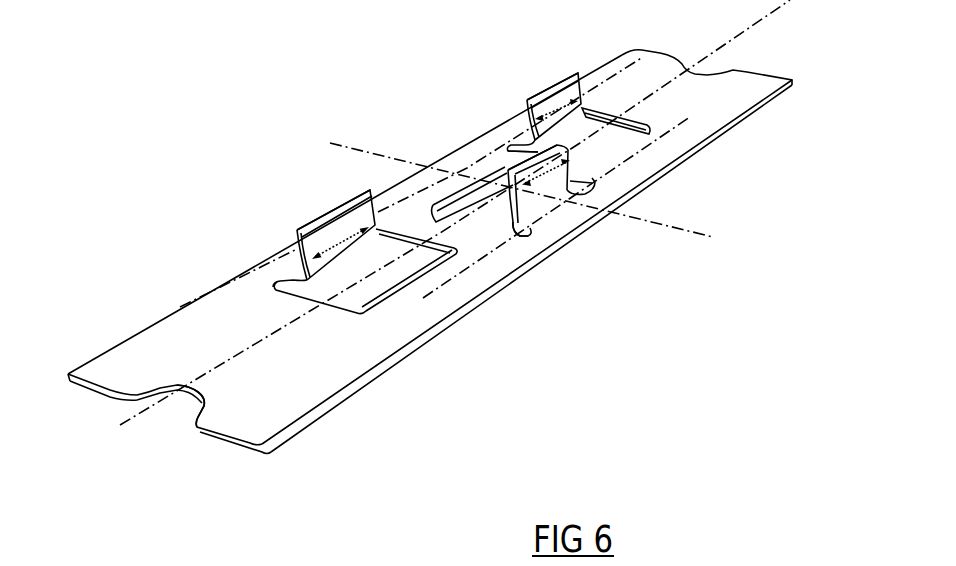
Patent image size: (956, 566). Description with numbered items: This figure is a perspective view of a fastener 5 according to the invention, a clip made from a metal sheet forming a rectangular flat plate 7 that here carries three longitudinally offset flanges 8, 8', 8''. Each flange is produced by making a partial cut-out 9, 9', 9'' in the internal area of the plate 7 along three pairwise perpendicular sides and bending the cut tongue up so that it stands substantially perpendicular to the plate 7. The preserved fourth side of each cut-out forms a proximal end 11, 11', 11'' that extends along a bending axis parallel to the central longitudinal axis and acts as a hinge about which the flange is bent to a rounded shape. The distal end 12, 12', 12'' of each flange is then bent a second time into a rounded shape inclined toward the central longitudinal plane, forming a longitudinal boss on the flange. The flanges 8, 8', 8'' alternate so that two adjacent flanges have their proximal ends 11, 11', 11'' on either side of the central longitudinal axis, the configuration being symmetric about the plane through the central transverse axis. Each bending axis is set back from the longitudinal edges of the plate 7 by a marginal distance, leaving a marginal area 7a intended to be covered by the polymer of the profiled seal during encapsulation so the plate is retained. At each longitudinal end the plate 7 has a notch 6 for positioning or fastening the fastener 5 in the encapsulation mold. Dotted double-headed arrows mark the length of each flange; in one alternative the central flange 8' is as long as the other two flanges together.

The fastener 5 is at (210, 147).
The notch 6 is at (192, 400).
The rectangular flat plate 7 is at (338, 363).
The marginal area 7a is at (483, 140).
The flange 8 is at (302, 210).
The flange 8' is at (603, 190).
The flange 8'' is at (530, 92).
The partial cut-out 9 is at (365, 307).
The partial cut-out 9' is at (404, 182).
The partial cut-out 9'' is at (672, 137).
The proximal end 11 is at (234, 259).
The proximal end 11' is at (614, 233).
The proximal end 11'' is at (483, 89).
The distal end 12 is at (275, 209).
The distal end 12' is at (601, 172).
The distal end 12'' is at (605, 54).